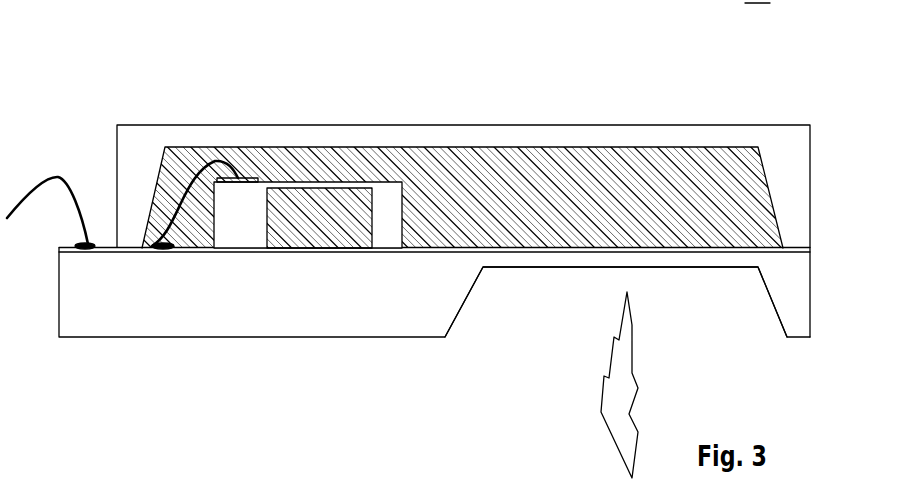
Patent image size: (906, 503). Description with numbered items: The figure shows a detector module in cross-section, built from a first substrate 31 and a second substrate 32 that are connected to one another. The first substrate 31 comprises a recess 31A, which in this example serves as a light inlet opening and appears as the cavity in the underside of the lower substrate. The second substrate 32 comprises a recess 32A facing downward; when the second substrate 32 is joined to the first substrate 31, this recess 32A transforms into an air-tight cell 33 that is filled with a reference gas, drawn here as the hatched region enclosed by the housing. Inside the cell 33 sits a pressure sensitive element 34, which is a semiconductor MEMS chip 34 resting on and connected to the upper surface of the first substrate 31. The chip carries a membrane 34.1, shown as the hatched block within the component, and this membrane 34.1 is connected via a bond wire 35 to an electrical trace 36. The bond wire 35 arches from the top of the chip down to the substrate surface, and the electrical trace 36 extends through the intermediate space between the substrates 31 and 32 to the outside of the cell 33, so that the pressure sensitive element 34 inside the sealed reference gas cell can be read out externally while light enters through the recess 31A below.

The first substrate 31 is at (383, 320).
The recess 31A is at (558, 268).
The second substrate 32 is at (681, 128).
The recess 32A is at (436, 151).
The air-tight cell 33 is at (583, 162).
The pressure sensitive element 34 is at (396, 218).
The membrane 34.1 is at (317, 187).
The bond wire 35 is at (206, 156).
The electrical trace 36 is at (104, 240).